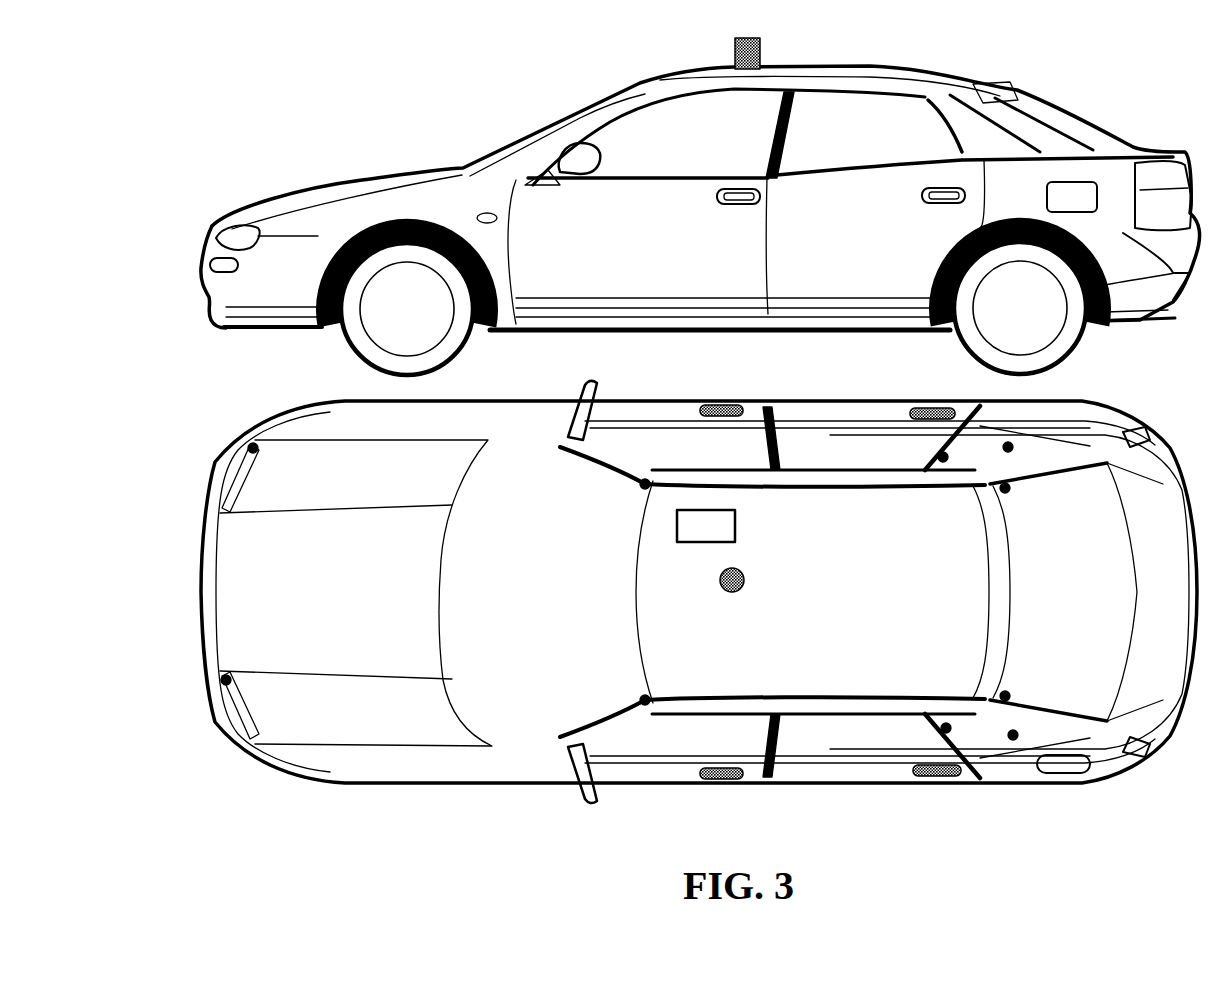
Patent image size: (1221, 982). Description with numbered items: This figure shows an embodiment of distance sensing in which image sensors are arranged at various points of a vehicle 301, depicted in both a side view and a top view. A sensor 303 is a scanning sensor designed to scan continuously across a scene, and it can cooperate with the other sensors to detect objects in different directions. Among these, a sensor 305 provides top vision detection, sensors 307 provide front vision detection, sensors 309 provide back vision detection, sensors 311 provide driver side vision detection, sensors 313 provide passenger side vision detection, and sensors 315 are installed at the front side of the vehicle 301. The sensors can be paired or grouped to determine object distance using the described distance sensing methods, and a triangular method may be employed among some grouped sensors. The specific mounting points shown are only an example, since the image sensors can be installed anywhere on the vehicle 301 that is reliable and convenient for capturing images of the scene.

The vehicle 301 is at (318, 186).
The scanning sensor 303 is at (760, 44).
The sensor for top vision detection 305 is at (744, 589).
The sensors for front vision detection 307 is at (645, 700).
The sensors for back vision detection 309 is at (1008, 692).
The sensors for driver side vision detection 311 is at (947, 729).
The sensors for passenger side vision detection 313 is at (1008, 447).
The front side sensors 315 is at (255, 449).